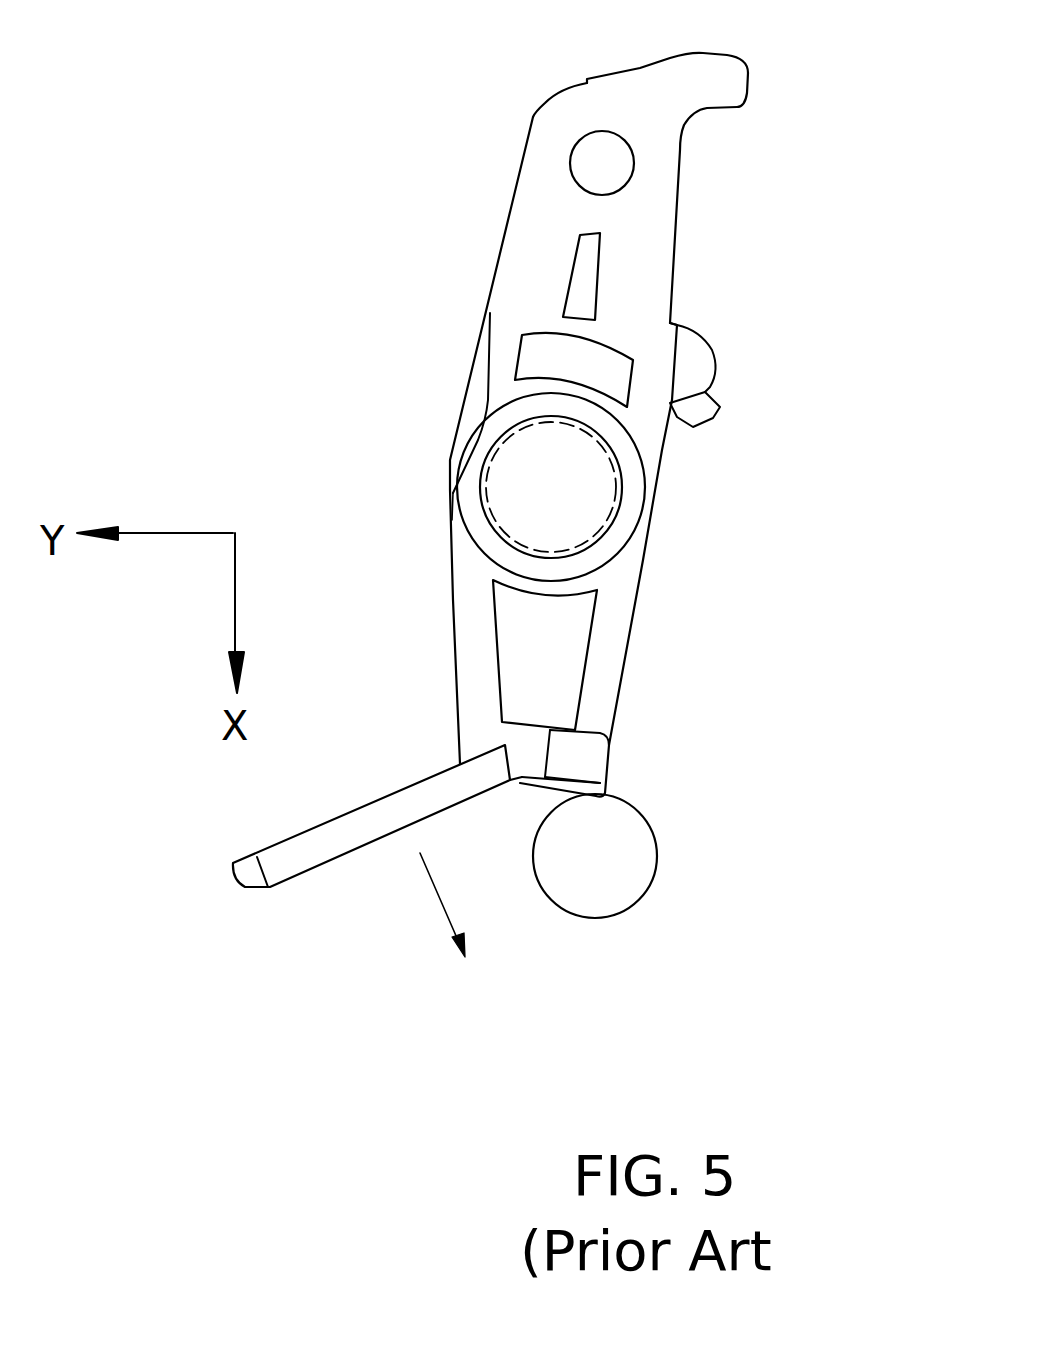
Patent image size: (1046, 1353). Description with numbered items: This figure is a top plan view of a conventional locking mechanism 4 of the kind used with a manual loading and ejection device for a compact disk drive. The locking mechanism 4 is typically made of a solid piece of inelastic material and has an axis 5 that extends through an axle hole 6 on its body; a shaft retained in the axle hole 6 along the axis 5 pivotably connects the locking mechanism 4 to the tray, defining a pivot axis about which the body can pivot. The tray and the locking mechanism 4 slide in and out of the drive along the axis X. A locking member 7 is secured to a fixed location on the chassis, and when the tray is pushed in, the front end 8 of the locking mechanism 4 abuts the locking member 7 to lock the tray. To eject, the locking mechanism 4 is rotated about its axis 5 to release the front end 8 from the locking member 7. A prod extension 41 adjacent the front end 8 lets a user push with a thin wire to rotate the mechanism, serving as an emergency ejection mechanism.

The locking mechanism 4 is at (640, 258).
The axis 5 is at (603, 447).
The axle hole 6 is at (613, 520).
The locking member 7 is at (650, 885).
The front end 8 is at (596, 768).
The prod extension 41 is at (337, 847).